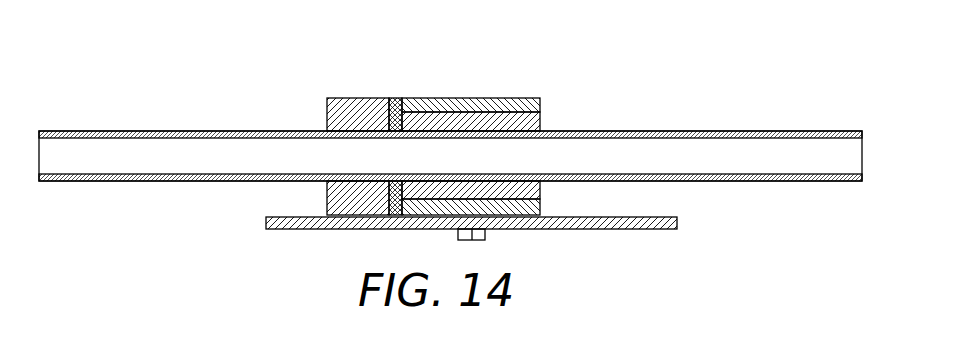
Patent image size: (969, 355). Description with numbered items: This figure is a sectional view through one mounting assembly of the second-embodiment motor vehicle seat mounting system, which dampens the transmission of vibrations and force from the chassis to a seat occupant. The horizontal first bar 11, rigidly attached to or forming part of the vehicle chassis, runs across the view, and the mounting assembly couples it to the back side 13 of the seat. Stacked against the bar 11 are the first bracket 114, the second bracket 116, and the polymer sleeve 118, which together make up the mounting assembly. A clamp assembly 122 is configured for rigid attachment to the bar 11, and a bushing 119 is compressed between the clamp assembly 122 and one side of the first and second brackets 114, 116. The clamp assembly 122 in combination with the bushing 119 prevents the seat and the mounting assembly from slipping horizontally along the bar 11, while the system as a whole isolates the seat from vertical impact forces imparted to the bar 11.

The first bar 11 is at (809, 131).
The back side 13 is at (661, 217).
The first bracket 114 is at (540, 210).
The second bracket 116 is at (540, 102).
The polymer sleeve 118 is at (540, 122).
The bushing 119 is at (396, 98).
The clamp assembly 122 is at (327, 110).